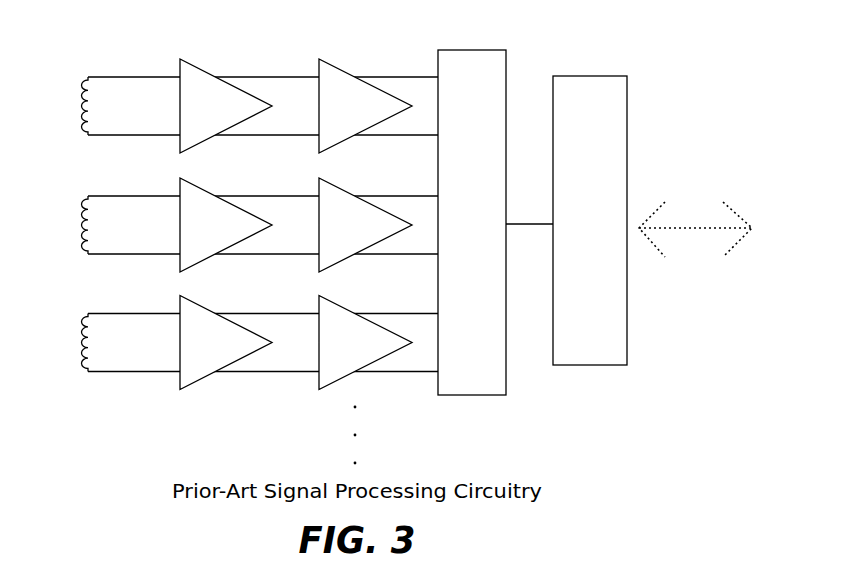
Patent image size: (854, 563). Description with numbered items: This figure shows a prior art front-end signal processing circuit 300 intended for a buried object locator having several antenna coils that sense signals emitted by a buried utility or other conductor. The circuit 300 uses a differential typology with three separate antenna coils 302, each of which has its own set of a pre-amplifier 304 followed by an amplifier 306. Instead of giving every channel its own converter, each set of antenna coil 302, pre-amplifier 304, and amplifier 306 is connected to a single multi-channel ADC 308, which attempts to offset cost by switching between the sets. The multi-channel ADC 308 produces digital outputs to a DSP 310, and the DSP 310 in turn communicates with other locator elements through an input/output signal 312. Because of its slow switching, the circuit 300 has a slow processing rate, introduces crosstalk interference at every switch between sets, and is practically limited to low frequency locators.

The front-end signal processing circuit 300 is at (181, 18).
The antenna coil 302 is at (74, 77).
The pre-amplifier 304 is at (228, 118).
The amplifier 306 is at (369, 118).
The multi-channel ADC 308 is at (494, 390).
The DSP 310 is at (611, 359).
The input/output signal 312 is at (699, 272).